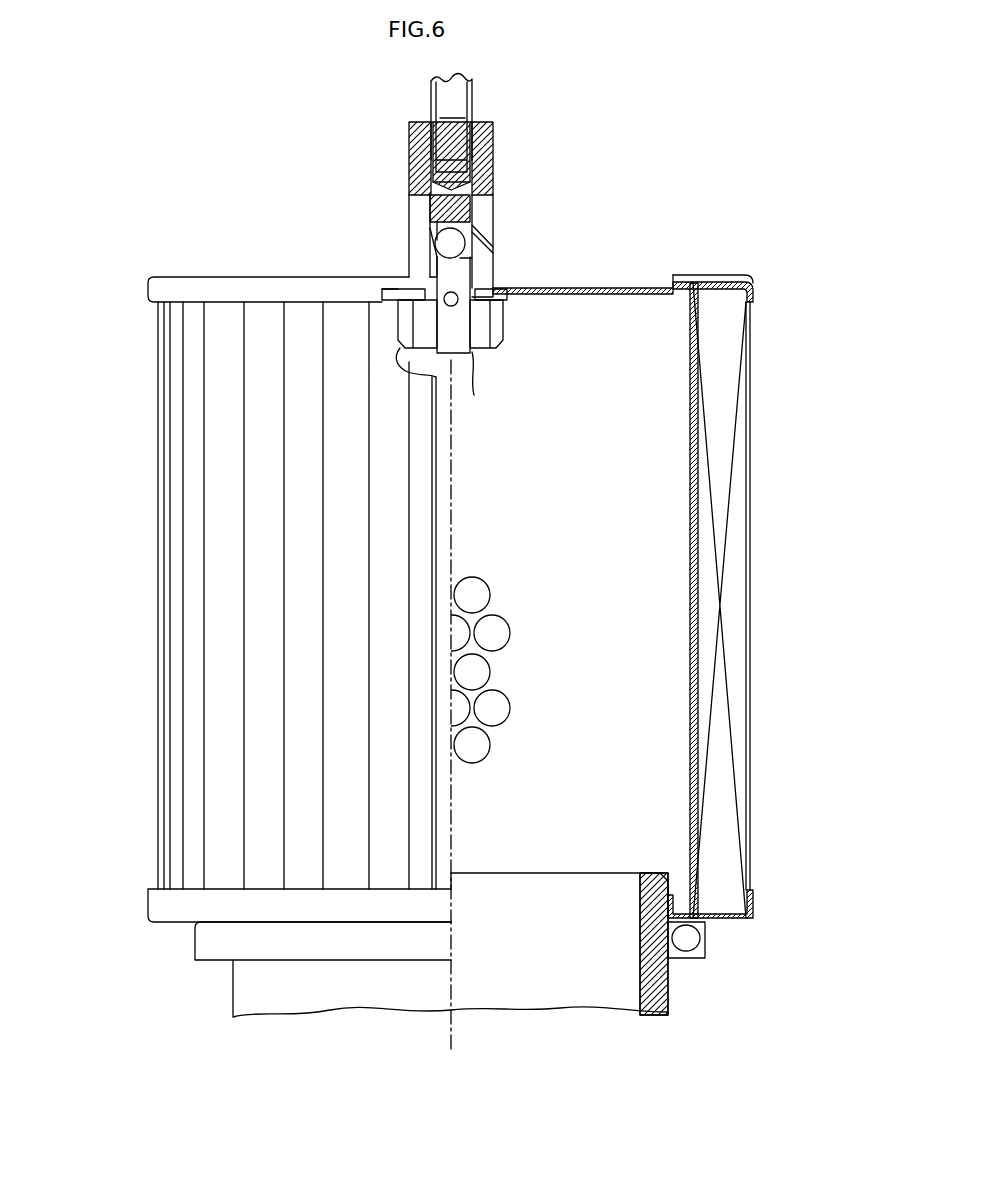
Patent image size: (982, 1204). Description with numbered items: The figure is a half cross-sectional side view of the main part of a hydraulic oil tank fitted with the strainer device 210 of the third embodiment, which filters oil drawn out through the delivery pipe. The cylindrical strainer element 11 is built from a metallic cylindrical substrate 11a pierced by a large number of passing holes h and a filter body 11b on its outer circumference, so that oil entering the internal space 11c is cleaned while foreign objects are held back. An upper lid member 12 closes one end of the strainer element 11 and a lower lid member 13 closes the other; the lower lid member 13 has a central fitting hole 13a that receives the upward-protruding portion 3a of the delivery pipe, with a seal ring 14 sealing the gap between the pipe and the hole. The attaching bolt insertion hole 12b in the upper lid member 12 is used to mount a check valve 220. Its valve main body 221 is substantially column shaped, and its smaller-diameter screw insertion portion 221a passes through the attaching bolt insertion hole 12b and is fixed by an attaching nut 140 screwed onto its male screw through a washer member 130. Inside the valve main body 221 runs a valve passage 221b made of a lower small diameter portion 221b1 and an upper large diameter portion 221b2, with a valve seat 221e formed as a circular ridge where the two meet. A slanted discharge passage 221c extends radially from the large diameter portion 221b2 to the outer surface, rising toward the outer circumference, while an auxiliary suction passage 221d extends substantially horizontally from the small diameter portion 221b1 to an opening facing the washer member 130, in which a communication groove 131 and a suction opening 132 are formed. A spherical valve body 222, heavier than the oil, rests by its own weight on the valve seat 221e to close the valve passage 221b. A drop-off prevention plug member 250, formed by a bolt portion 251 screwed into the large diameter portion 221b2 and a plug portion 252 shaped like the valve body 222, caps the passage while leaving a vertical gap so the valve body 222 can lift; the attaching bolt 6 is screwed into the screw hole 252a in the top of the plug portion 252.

The attaching bolt 6 is at (440, 90).
The strainer element 11 is at (190, 465).
The substrate 11a is at (690, 541).
The filter body 11b is at (715, 597).
The internal space 11c is at (657, 677).
The upper lid member 12 is at (148, 291).
The attaching bolt insertion hole 12b is at (496, 282).
The lower lid member 13 is at (158, 902).
The fitting hole 13a is at (665, 897).
The seal ring 14 is at (685, 938).
The portion of the delivery pipe 3a is at (240, 998).
The passing holes h is at (510, 708).
The washer member 130 is at (518, 333).
The communication groove 131 is at (437, 288).
The suction opening 132 is at (405, 276).
The attaching nut 140 is at (490, 345).
The strainer device 210 is at (118, 363).
The check valve 220 is at (597, 178).
The valve main body 221 is at (488, 170).
The screw insertion portion 221a is at (468, 350).
The valve passage 221b is at (247, 187).
The small diameter portion 221b1 is at (437, 268).
The large diameter portion 221b2 is at (437, 235).
The discharge passage 221c is at (480, 235).
The auxiliary suction passage 221d is at (505, 304).
The valve seat 221e is at (465, 250).
The valve body 222 is at (493, 200).
The drop-off prevention plug member 250 is at (270, 118).
The bolt portion 251 is at (437, 213).
The plug portion 252 is at (423, 145).
The screw hole 252a is at (455, 118).